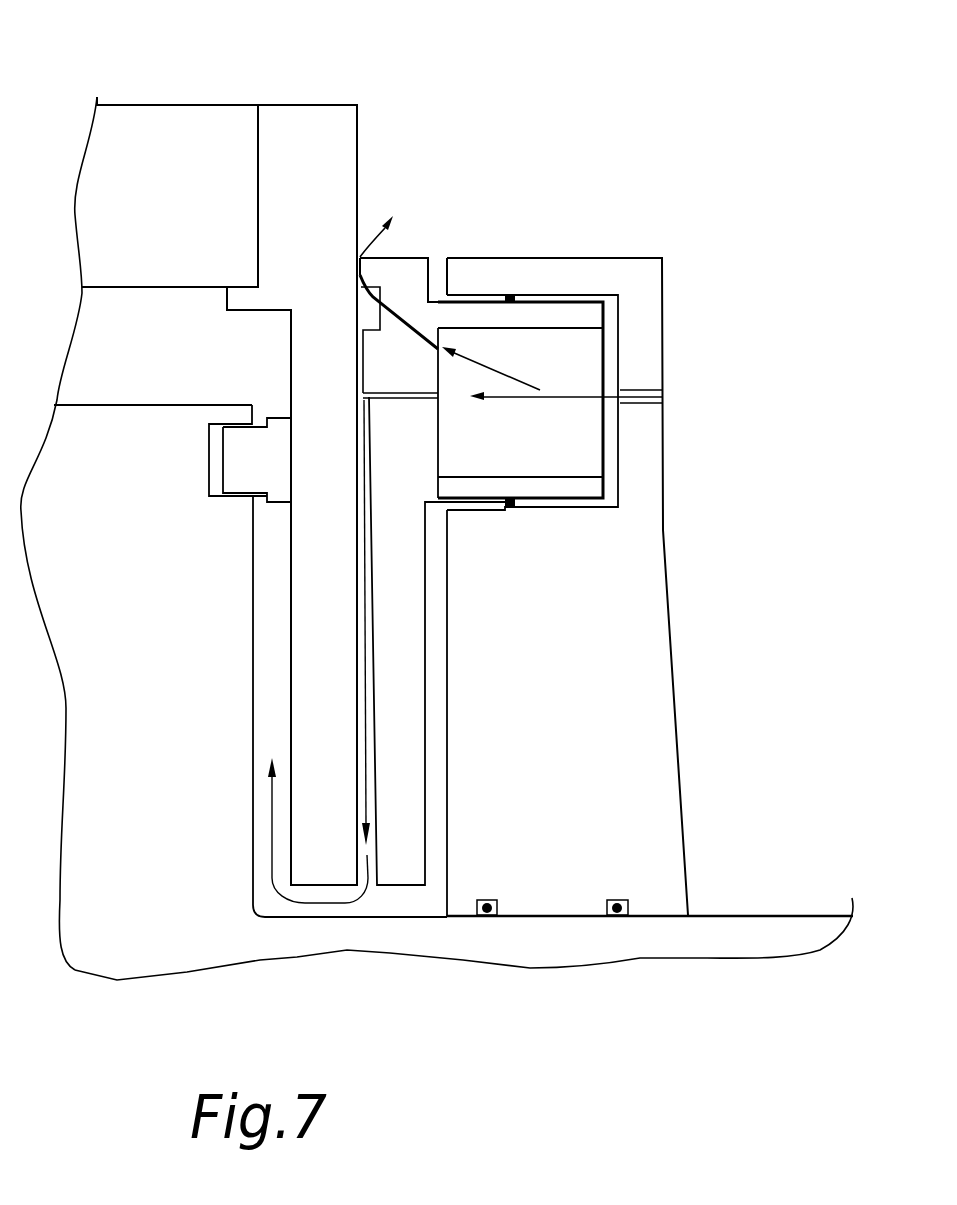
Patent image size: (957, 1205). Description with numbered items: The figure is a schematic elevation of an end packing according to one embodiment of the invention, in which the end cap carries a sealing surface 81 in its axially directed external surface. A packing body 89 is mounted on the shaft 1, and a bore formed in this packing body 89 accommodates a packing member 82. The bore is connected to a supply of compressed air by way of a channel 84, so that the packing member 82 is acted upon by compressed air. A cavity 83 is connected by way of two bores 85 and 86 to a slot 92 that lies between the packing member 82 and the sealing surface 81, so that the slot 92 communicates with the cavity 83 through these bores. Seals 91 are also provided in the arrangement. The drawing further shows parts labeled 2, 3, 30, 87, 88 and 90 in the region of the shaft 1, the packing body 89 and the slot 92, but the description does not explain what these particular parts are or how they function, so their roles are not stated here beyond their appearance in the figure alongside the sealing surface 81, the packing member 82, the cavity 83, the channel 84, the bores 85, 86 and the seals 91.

The shaft 1 is at (136, 631).
The upper housing portion 2 is at (166, 146).
The partition wall 3 is at (331, 485).
The clip 30 is at (228, 411).
The sealing surface 81 is at (461, 641).
The packing member 82 is at (461, 284).
The cavity 83 is at (520, 400).
The channel 84 is at (561, 359).
The bore 85 is at (524, 359).
The bore 86 is at (466, 490).
The air outlet flow 87 is at (439, 194).
The air channel 88 is at (258, 706).
The packing body 89 is at (575, 544).
The seals 90 is at (552, 864).
The seals 91 is at (590, 711).
The slot 92 is at (403, 713).